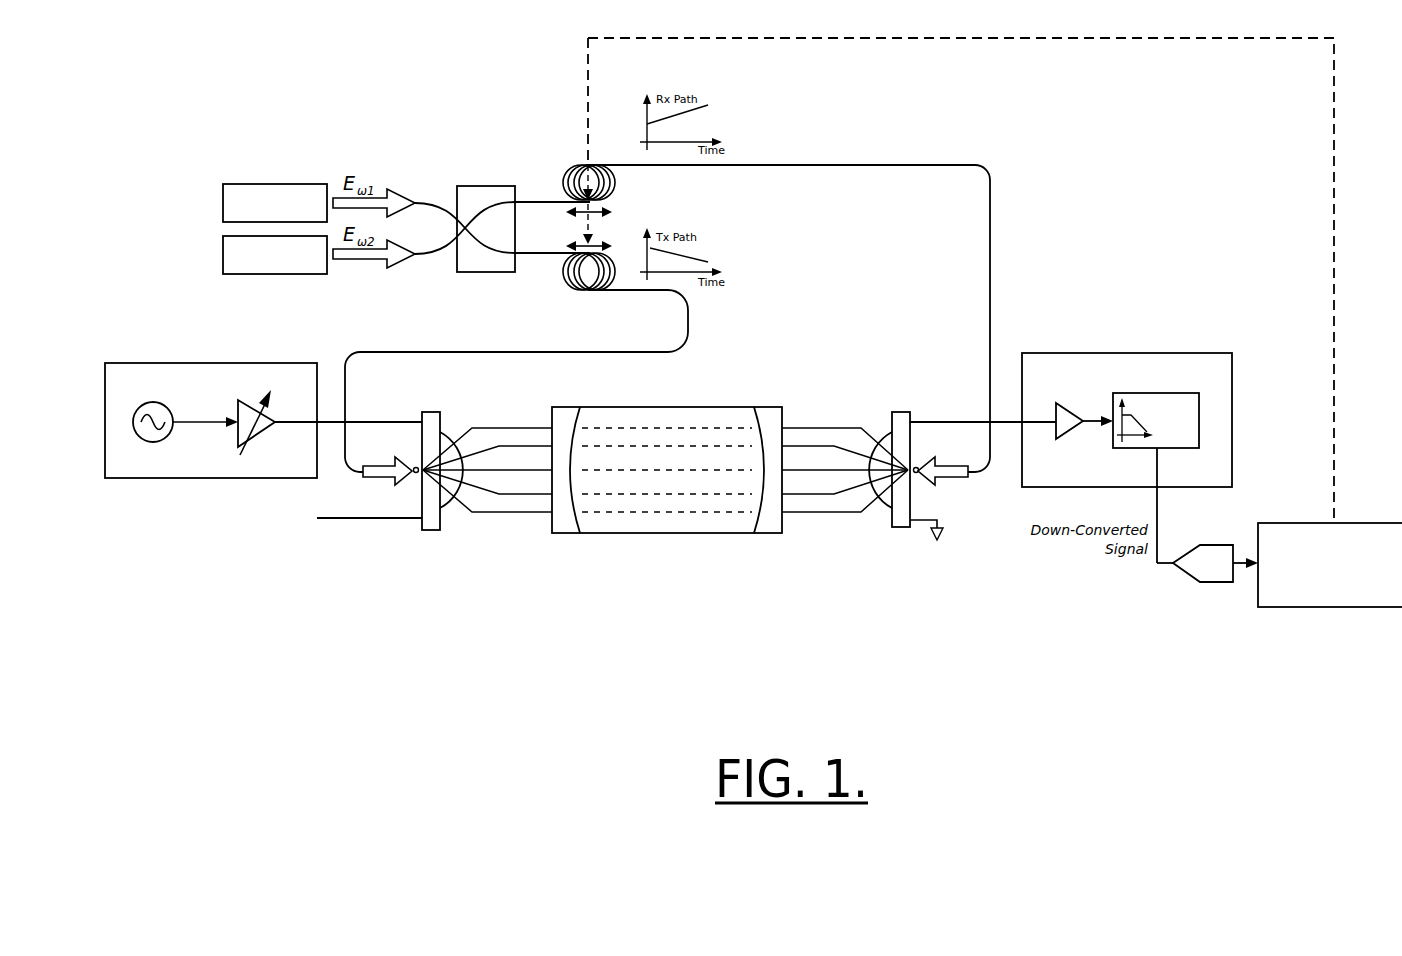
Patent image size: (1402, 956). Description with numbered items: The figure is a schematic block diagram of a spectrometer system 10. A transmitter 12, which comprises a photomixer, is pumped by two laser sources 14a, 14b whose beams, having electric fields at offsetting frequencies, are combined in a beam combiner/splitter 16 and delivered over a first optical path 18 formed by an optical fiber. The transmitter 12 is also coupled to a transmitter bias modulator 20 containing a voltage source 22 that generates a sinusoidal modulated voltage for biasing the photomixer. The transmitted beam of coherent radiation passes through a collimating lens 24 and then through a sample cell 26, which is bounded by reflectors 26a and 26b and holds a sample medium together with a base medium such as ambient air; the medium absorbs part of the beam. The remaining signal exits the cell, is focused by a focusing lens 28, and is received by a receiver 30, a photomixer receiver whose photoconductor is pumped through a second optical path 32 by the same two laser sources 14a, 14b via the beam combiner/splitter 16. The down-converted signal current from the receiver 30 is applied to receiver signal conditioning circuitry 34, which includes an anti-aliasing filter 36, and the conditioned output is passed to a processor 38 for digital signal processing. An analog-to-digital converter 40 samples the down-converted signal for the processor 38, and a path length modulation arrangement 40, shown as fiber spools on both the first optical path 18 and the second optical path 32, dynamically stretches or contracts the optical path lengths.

The spectrometer system 10 is at (1101, 144).
The transmitter 12 is at (431, 412).
The laser source 14a is at (280, 184).
The laser source 14b is at (280, 274).
The beam combiner/splitter 16 is at (483, 186).
The first optical path 18 is at (497, 352).
The transmitter bias modulator 20 is at (169, 480).
The voltage source 22 is at (172, 411).
The collimating lens 24 is at (458, 515).
The sample cell 26 is at (666, 407).
The reflector 26a is at (567, 533).
The reflector 26b is at (767, 533).
The focusing lens 28 is at (870, 513).
The receiver 30 is at (899, 412).
The second optical path 32 is at (883, 164).
The receiver signal conditioning circuitry 34 is at (1232, 413).
The anti-aliasing filter 36 is at (1155, 393).
The processor 38 is at (1292, 523).
The path length modulation arrangement / analog-to-digital converter 40 is at (569, 164).